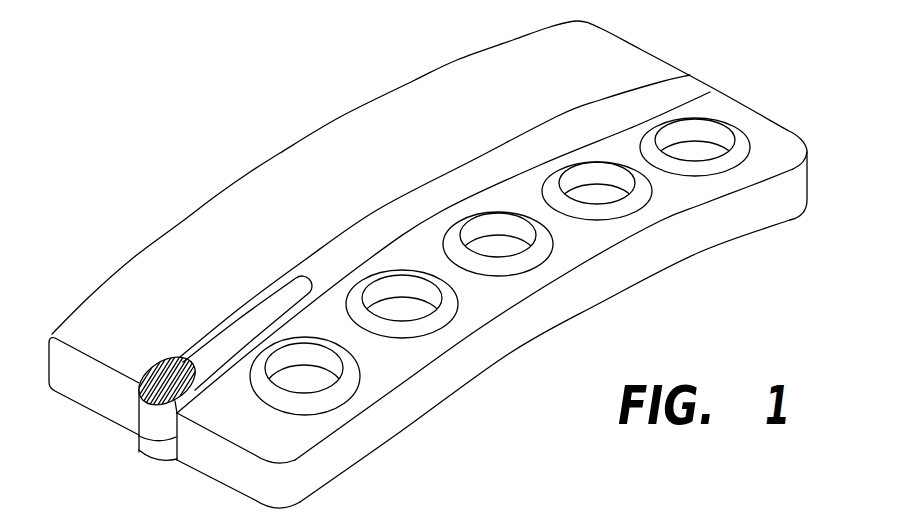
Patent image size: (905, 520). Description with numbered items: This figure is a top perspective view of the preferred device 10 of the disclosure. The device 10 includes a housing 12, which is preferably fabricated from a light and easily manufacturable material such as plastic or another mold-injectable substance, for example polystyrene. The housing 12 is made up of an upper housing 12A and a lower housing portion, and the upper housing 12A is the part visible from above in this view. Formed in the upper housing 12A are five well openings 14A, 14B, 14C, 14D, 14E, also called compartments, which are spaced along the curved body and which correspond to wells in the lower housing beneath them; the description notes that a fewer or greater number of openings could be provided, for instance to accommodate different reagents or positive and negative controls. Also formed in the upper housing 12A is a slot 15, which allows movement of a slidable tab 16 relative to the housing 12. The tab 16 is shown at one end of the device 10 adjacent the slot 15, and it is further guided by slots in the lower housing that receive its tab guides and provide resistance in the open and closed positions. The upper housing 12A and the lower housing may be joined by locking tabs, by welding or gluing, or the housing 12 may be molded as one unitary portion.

The device 10 is at (181, 106).
The housing 12 is at (601, 63).
The upper housing 12A is at (510, 105).
The well opening 14A is at (347, 382).
The well opening 14B is at (443, 313).
The well opening 14C is at (537, 257).
The well opening 14D is at (633, 205).
The well opening 14E is at (740, 152).
The slot 15 is at (250, 327).
The slidable tab 16 is at (150, 421).